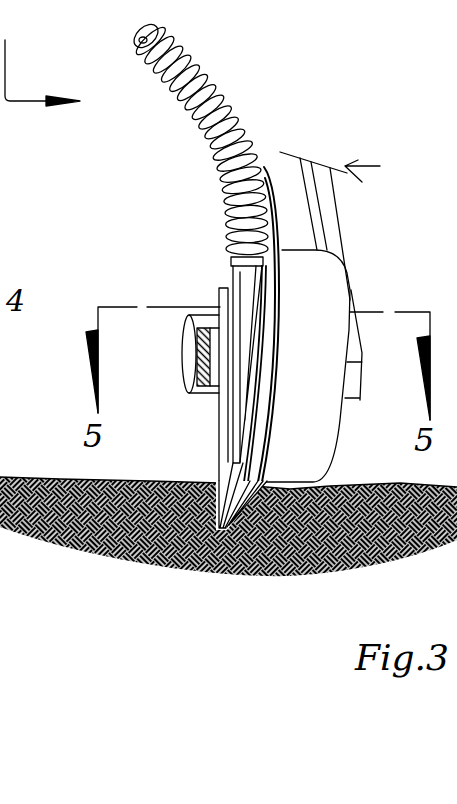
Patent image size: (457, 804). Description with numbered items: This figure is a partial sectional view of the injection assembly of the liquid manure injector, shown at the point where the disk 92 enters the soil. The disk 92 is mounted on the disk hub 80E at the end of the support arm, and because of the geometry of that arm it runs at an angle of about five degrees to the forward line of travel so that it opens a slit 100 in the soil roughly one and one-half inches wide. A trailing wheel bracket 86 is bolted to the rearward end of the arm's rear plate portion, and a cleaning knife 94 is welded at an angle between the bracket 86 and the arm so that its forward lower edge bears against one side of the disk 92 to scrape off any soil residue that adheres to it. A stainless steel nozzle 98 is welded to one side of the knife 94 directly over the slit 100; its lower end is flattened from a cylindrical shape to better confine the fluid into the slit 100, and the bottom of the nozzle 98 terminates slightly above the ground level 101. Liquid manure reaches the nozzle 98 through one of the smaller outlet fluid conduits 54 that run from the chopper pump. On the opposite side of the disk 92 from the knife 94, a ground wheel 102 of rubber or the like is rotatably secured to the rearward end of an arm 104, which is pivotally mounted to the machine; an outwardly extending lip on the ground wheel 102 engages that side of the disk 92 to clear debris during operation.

The outlet fluid conduit 54 is at (204, 72).
The disk 92 is at (213, 158).
The arm 104 is at (344, 236).
The ground wheel 102 is at (337, 465).
The disk hub 80E is at (183, 323).
The trailing wheel bracket 86 is at (205, 328).
The cleaning knife 94 is at (222, 440).
The nozzle 98 is at (258, 388).
The slit 100 is at (213, 482).
The ground level 101 is at (50, 478).